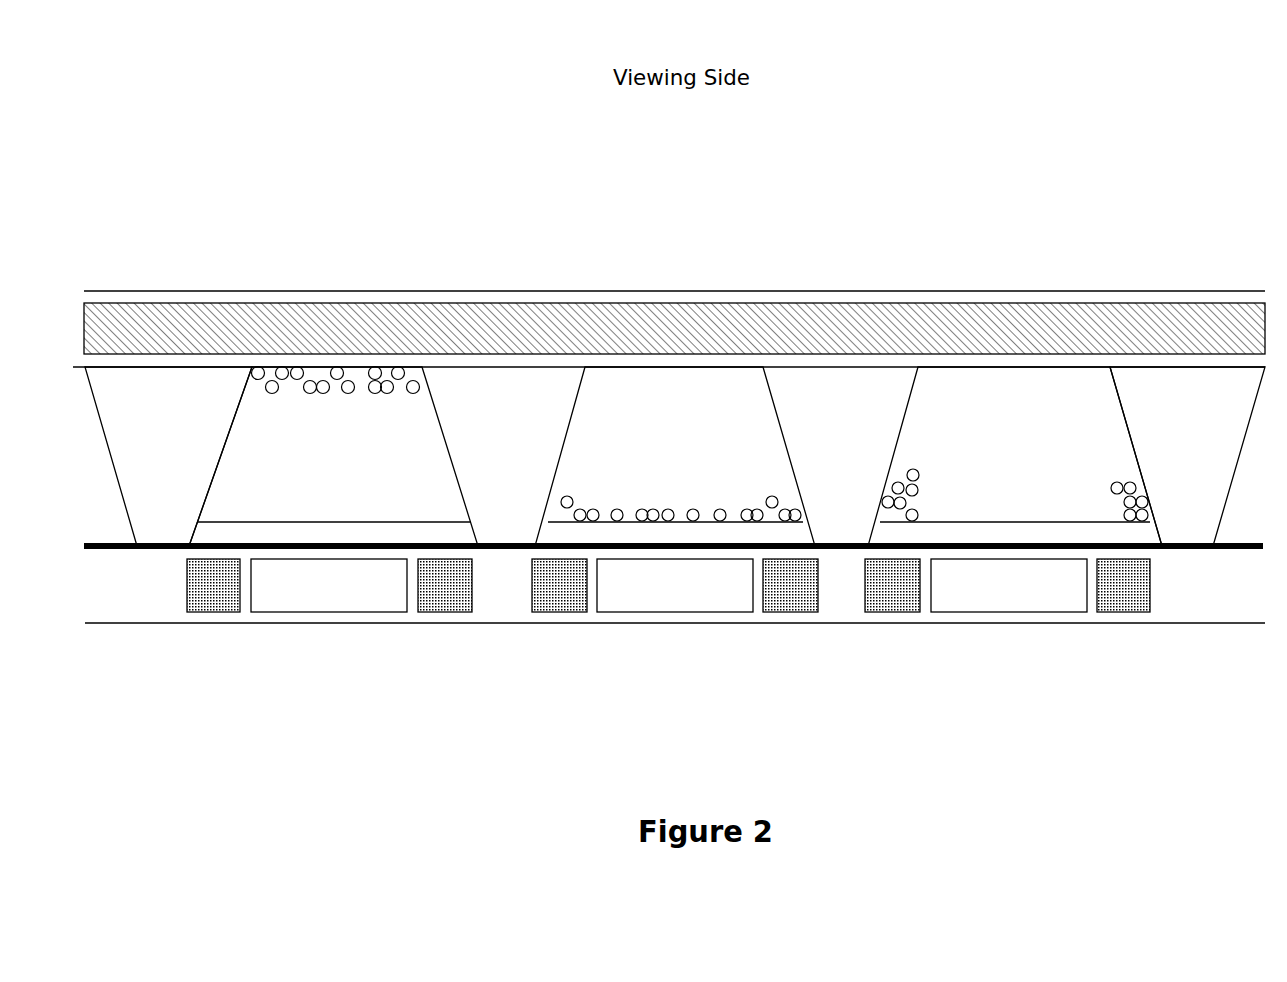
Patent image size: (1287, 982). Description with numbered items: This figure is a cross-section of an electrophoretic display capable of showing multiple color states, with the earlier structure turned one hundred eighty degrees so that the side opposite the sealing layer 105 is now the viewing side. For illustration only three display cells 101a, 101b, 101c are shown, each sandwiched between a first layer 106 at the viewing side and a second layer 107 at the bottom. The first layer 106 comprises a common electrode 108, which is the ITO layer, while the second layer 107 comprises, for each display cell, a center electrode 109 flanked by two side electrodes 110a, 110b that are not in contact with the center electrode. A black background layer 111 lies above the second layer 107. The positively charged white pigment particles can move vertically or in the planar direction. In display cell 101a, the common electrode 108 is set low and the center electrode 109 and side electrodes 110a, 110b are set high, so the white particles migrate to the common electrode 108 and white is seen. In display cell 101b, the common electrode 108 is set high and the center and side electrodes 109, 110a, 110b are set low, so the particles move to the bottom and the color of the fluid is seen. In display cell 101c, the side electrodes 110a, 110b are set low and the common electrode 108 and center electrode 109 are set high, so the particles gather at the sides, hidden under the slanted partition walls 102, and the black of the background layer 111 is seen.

The display cell 101a is at (333, 457).
The display cell 101b is at (675, 456).
The display cell 101c is at (1015, 456).
The slanted partition walls 102 is at (168, 456).
The sealing layer 105 is at (1098, 548).
The first layer 106 is at (200, 283).
The second layer 107 is at (162, 596).
The common electrode 108 is at (675, 330).
The center electrode 109 is at (669, 585).
The side electrode 110a is at (214, 596).
The side electrode 110b is at (445, 596).
The black background layer 111 is at (1188, 561).